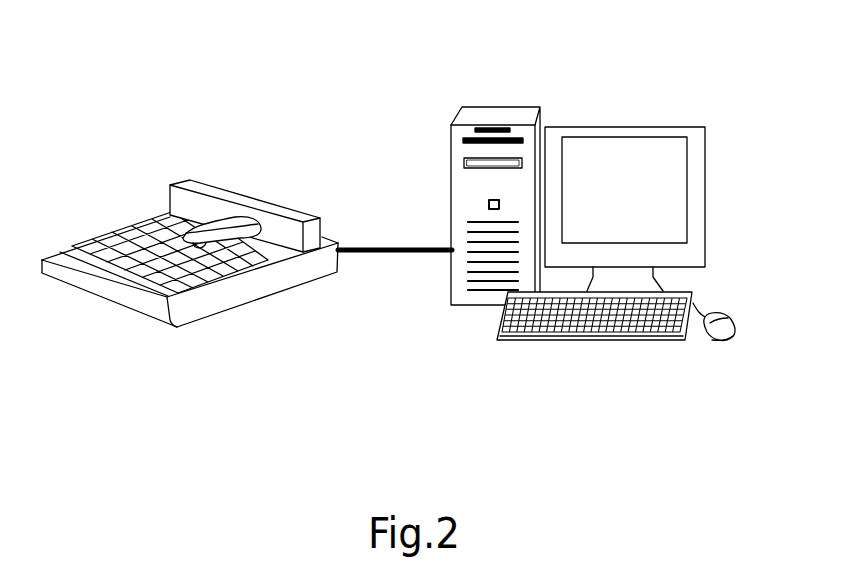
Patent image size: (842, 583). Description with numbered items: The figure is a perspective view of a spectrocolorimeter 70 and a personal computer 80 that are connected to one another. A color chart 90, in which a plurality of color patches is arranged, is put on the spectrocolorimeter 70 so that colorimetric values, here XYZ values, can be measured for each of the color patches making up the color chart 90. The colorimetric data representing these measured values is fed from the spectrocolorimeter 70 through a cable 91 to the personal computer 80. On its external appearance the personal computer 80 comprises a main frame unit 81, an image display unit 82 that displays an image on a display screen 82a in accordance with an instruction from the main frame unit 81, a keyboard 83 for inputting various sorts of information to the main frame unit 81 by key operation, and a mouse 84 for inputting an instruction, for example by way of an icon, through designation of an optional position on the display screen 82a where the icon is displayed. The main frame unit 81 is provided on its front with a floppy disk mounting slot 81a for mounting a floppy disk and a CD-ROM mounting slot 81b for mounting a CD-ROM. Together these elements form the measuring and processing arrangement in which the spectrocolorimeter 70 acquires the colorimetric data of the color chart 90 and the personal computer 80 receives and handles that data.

The spectrocolorimeter 70 is at (180, 204).
The color chart 90 is at (82, 250).
The cable 91 is at (390, 247).
The personal computer 80 is at (580, 177).
The main frame unit 81 is at (451, 168).
The floppy disk mounting slot 81a is at (462, 139).
The CD-ROM mounting slot 81b is at (464, 160).
The image display unit 82 is at (669, 171).
The display screen 82a is at (687, 173).
The keyboard 83 is at (693, 295).
The mouse 84 is at (736, 330).